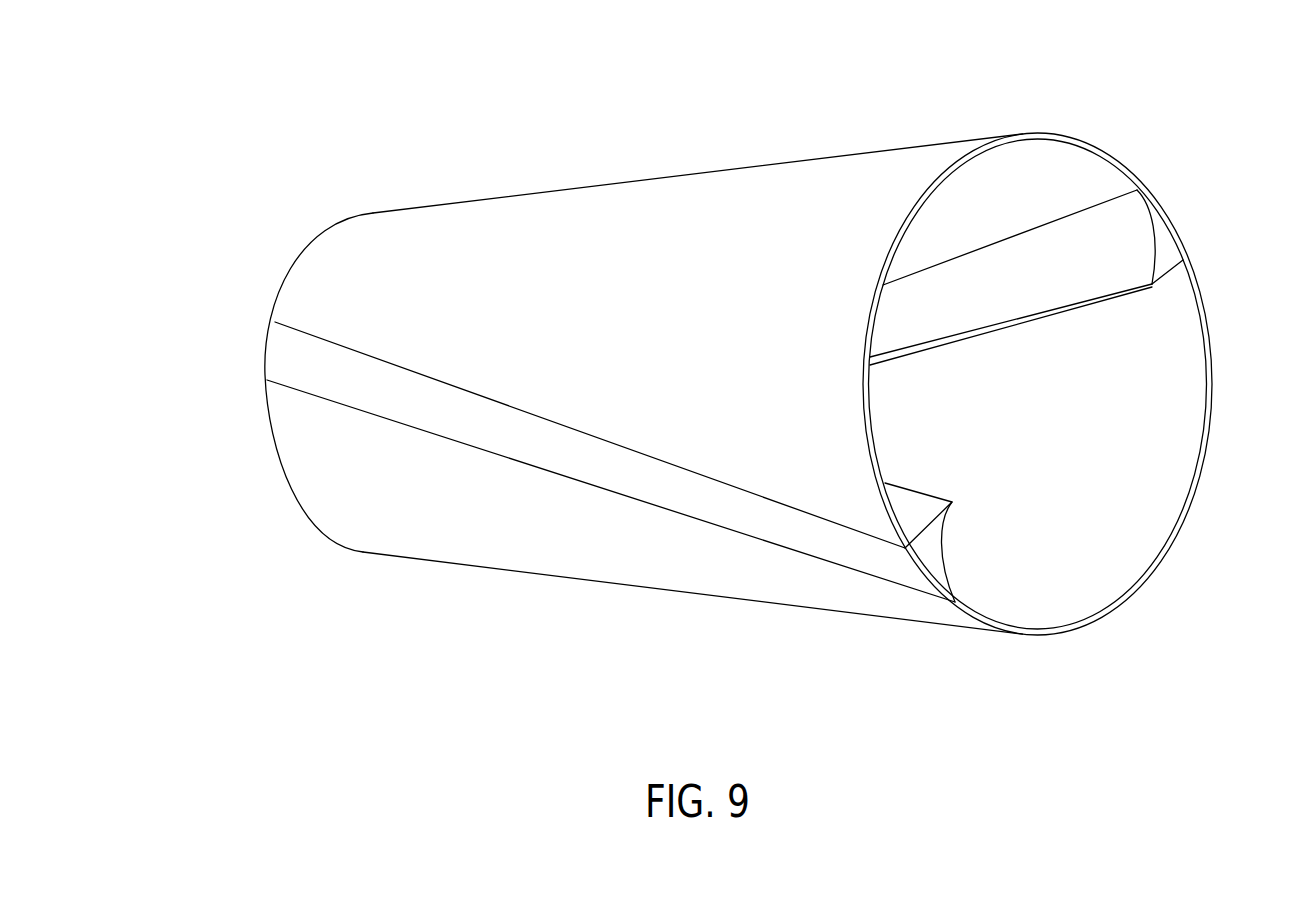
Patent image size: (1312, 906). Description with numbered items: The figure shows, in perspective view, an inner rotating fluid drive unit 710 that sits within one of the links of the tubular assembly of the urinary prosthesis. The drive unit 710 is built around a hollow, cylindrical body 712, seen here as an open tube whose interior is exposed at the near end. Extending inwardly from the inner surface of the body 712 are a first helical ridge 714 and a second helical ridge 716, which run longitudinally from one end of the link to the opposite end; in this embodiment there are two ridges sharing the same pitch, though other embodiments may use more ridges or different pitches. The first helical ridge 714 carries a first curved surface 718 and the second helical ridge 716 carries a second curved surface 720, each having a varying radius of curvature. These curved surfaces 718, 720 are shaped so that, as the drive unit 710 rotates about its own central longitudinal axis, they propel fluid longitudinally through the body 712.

The inner rotating fluid drive unit 710 is at (750, 362).
The hollow, cylindrical body 712 is at (757, 218).
The first helical ridge 714 is at (1083, 217).
The second helical ridge 716 is at (1043, 586).
The first curved surface 718 is at (1047, 268).
The second curved surface 720 is at (942, 528).